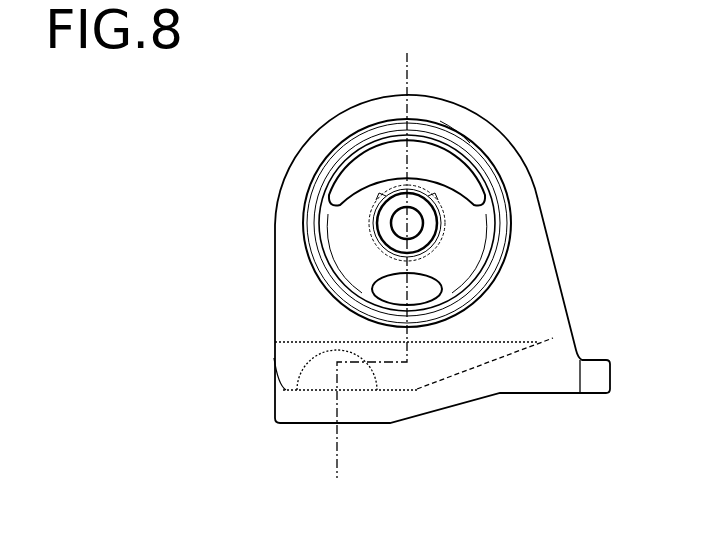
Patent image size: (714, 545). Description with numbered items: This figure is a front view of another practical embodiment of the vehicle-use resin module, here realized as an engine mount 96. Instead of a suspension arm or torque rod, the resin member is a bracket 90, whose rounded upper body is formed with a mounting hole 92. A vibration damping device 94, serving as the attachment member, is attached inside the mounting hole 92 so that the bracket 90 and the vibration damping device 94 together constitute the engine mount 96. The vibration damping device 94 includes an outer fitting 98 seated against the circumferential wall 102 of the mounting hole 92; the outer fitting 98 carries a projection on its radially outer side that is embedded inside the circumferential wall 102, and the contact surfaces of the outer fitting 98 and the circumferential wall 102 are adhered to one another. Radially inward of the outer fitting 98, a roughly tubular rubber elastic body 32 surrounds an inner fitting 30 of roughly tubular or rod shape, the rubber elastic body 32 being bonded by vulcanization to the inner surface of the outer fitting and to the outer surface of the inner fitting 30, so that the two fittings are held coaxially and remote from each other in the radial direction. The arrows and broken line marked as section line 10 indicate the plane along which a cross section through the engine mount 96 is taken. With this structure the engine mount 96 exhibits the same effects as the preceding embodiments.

The section line 10- 10 is at (437, 69).
The inner fitting 30 is at (425, 235).
The rubber elastic body 32 is at (350, 248).
The bracket 90 is at (299, 126).
The mounting hole 92 is at (466, 156).
The vibration damping device 94 is at (296, 220).
The engine mount 96 is at (584, 99).
The outer fitting 98 is at (507, 213).
The circumferential wall 102 is at (465, 122).